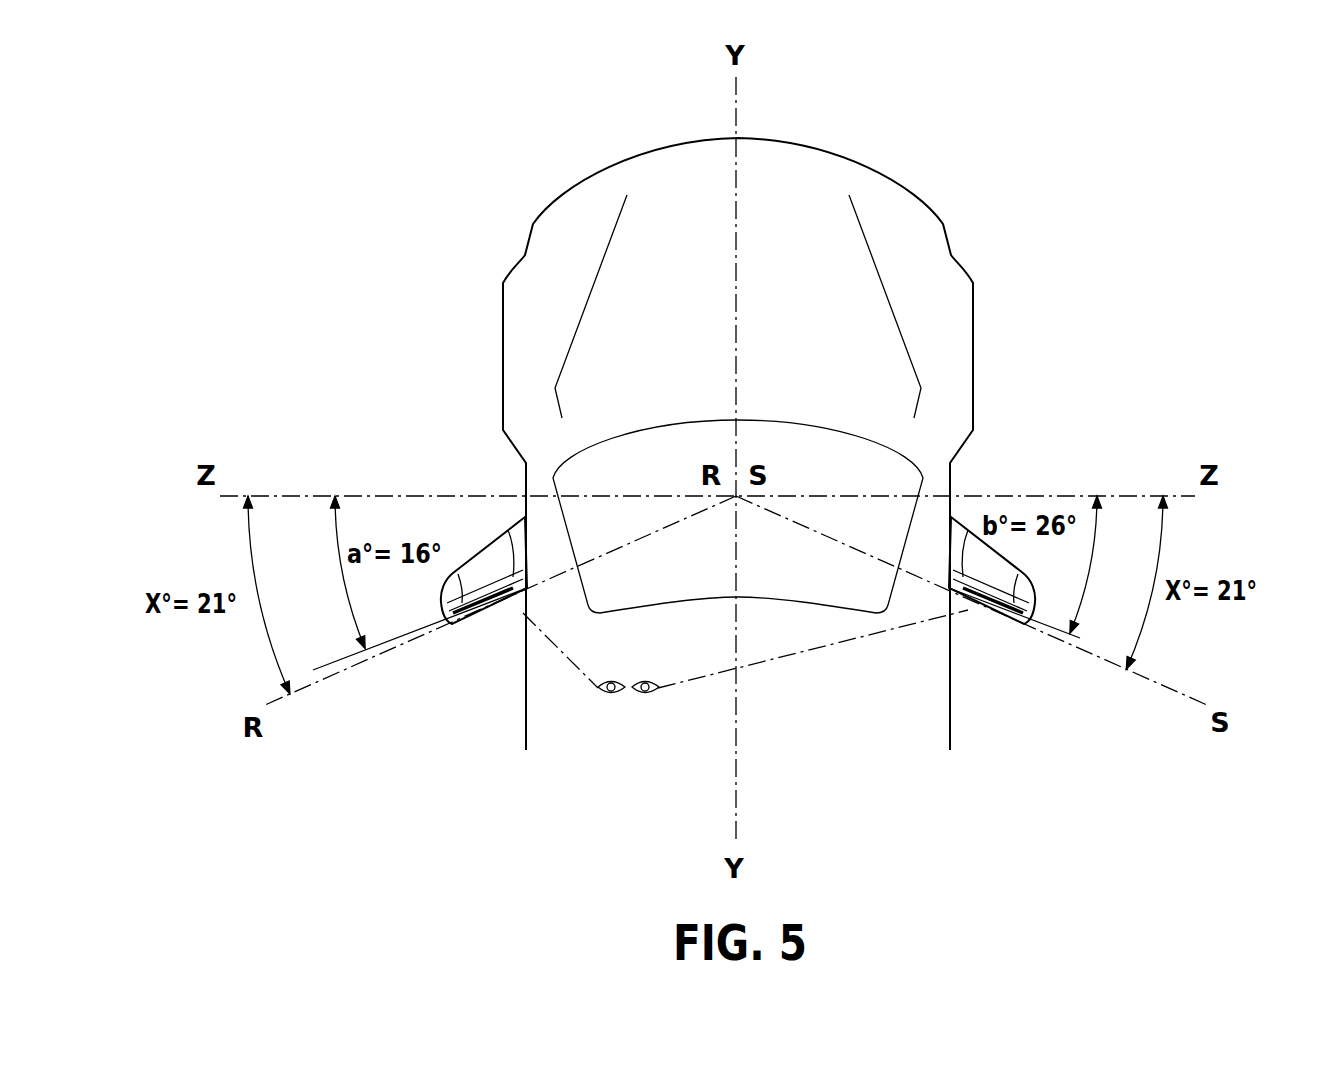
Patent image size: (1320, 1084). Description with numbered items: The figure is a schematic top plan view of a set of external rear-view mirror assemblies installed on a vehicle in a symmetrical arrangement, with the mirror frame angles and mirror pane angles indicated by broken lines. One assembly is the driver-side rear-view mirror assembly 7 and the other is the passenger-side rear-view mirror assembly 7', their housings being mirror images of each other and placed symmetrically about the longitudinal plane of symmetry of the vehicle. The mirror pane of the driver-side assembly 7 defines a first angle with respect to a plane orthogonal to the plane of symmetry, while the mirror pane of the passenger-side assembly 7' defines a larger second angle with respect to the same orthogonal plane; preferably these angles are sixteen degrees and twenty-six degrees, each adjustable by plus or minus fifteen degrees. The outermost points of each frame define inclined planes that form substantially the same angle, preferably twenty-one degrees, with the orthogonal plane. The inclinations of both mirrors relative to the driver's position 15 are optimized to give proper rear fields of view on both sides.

The driver-side rear-view mirror assembly 7 is at (468, 648).
The passenger-side rear-view mirror assembly 7' is at (1014, 646).
The driver's position 15 is at (625, 720).